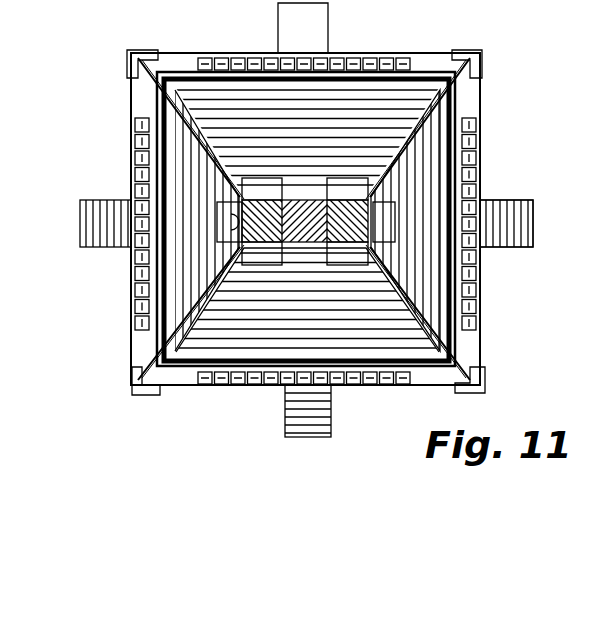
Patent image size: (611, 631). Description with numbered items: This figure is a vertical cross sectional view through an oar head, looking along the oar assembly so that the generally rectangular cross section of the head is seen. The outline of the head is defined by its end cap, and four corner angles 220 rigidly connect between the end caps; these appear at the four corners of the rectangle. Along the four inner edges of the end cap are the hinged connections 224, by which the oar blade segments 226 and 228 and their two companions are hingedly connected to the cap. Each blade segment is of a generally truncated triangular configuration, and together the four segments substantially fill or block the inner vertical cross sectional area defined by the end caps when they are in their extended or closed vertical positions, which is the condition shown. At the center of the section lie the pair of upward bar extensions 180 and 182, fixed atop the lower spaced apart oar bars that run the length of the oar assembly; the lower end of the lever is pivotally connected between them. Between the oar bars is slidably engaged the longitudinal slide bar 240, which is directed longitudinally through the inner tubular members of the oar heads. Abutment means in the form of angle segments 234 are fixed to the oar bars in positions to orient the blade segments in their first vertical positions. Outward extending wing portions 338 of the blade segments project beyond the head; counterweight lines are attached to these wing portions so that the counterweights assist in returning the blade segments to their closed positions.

The corner angle 220 is at (147, 43).
The hinged connection 224 is at (262, 47).
The oar blade segment 226 is at (359, 186).
The upward bar extension 182 is at (263, 215).
The upward bar extension 180 is at (338, 197).
The longitudinal slide bar 240 is at (303, 208).
The angle segment 234 is at (385, 217).
The wing portion 338 is at (528, 214).
The oar blade segment 228 is at (270, 332).